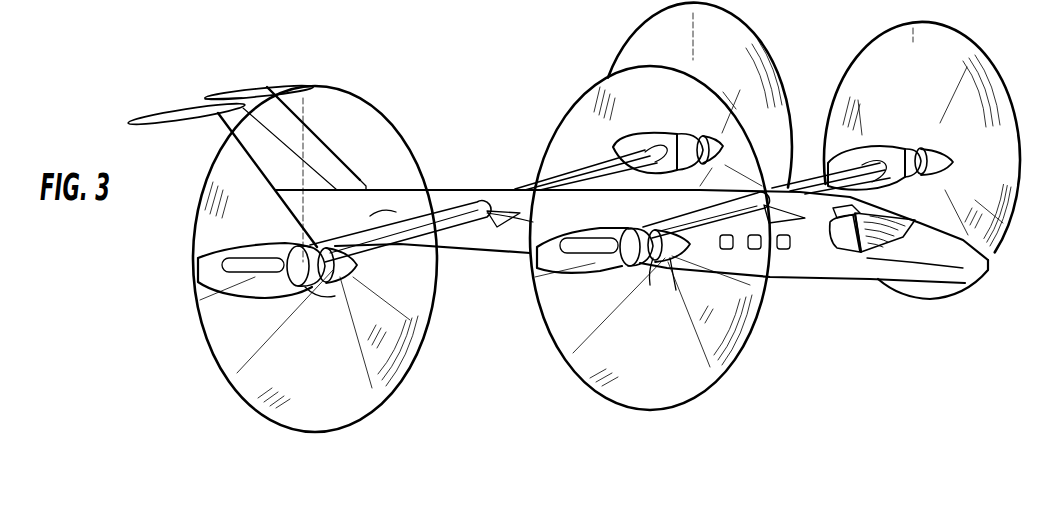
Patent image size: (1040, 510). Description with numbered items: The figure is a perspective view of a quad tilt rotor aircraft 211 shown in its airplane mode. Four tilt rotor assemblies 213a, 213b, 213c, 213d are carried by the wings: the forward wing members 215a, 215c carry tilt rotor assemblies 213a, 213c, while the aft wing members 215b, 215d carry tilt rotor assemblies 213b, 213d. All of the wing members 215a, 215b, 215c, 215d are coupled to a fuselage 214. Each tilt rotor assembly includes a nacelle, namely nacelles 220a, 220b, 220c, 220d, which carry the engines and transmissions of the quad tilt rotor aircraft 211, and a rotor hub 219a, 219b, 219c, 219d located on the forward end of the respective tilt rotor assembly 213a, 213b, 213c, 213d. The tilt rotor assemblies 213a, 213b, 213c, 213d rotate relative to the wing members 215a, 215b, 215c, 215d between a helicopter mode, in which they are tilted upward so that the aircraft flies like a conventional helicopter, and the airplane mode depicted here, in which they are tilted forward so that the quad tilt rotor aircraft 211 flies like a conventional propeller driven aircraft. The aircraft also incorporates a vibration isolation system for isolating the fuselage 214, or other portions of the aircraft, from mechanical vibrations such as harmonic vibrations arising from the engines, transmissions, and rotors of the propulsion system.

The quad tilt rotor aircraft 211 is at (517, 56).
The tilt rotor assembly 213a is at (918, 122).
The tilt rotor assembly 213b is at (668, 115).
The tilt rotor assembly 213c is at (608, 296).
The tilt rotor assembly 213d is at (168, 288).
The fuselage 214 is at (843, 268).
The forward wing member 215a is at (803, 183).
The aft wing member 215b is at (522, 182).
The forward wing member 215c is at (658, 207).
The aft wing member 215d is at (447, 202).
The rotor hub 219a is at (942, 158).
The rotor hub 219b is at (724, 143).
The rotor hub 219c is at (663, 263).
The rotor hub 219d is at (327, 283).
The nacelle 220a is at (875, 150).
The nacelle 220b is at (614, 148).
The nacelle 220c is at (590, 266).
The nacelle 220d is at (250, 297).